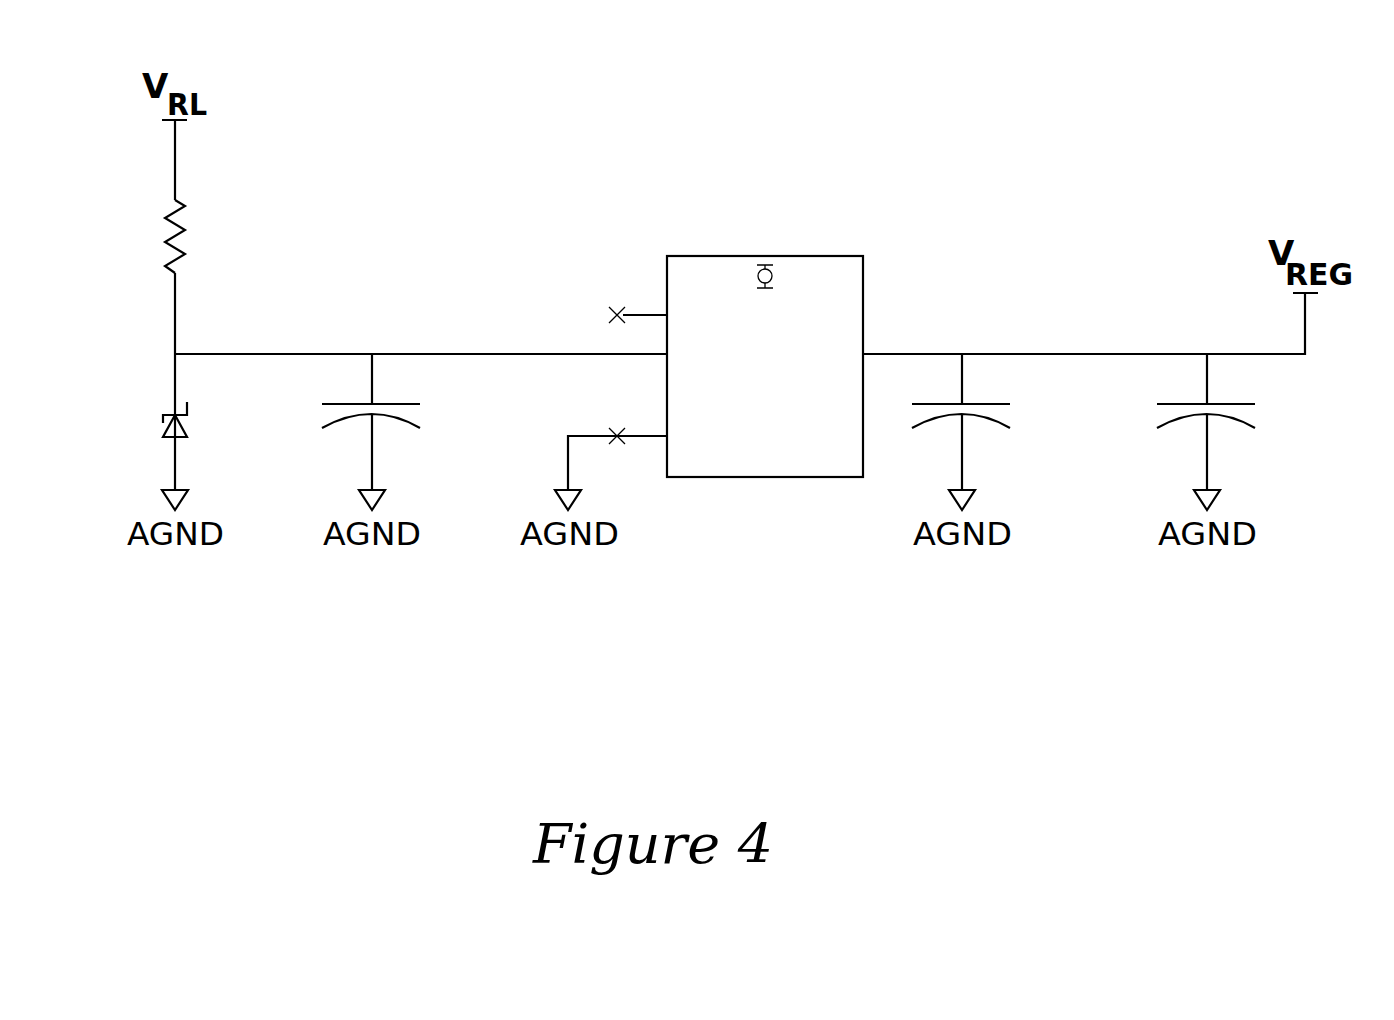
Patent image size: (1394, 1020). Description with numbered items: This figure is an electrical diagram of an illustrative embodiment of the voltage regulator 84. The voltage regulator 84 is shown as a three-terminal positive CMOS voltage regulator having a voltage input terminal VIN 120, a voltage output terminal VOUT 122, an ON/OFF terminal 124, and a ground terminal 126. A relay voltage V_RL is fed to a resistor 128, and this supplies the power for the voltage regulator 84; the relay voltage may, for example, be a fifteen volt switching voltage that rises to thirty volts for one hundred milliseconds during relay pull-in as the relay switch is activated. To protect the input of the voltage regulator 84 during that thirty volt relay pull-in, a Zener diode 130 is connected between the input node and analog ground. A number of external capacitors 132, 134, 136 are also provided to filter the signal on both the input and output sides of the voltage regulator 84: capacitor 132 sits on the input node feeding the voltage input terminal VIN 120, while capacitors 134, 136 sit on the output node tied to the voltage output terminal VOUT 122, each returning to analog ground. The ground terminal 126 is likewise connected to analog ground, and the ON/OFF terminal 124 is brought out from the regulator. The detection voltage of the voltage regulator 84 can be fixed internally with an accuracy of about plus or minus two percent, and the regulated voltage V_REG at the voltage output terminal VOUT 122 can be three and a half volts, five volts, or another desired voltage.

The voltage regulator 84 is at (825, 265).
The voltage input terminal VIN 120 is at (667, 357).
The voltage output terminal VOUT 122 is at (863, 354).
The ON/OFF terminal 124 is at (667, 312).
The ground terminal 126 is at (667, 440).
The resistor 128 is at (165, 218).
The Zener diode 130 is at (163, 435).
The external capacitor 132 is at (395, 404).
The external capacitor 134 is at (987, 403).
The external capacitor 136 is at (1182, 403).